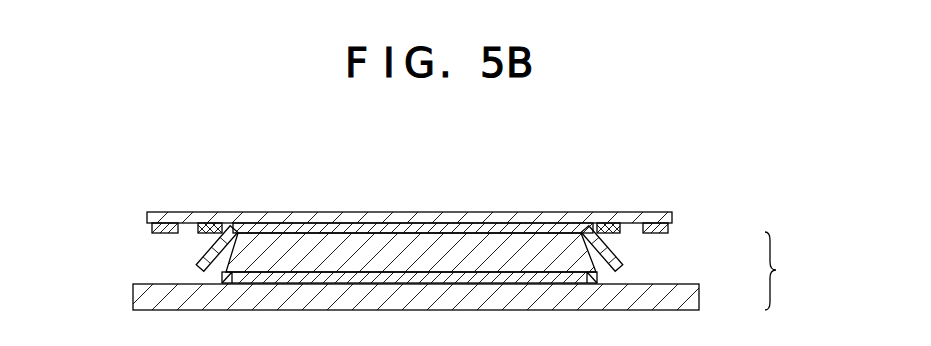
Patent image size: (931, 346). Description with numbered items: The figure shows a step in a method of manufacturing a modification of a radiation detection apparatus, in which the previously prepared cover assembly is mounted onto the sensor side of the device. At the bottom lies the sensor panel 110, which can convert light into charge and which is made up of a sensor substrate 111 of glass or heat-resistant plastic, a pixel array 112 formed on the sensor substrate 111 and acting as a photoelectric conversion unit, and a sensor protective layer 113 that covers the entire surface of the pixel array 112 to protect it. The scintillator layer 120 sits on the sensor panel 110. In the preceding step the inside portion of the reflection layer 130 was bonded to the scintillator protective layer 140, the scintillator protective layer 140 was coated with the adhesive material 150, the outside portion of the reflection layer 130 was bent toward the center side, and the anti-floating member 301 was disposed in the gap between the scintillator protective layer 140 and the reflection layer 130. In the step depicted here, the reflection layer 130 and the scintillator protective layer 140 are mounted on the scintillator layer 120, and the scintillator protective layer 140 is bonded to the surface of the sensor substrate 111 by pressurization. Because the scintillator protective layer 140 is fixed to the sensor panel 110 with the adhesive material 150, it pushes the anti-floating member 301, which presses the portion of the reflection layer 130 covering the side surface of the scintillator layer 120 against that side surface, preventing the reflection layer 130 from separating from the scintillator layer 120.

The sensor panel 110 is at (789, 271).
The sensor substrate 111 is at (687, 295).
The pixel array 112 is at (597, 280).
The sensor protective layer 113 is at (612, 258).
The scintillator layer 120 is at (394, 243).
The reflection layer 130 is at (457, 232).
The scintillator protective layer 140 is at (528, 220).
The adhesive material 150 is at (152, 225).
The anti-floating member 301 is at (199, 236).